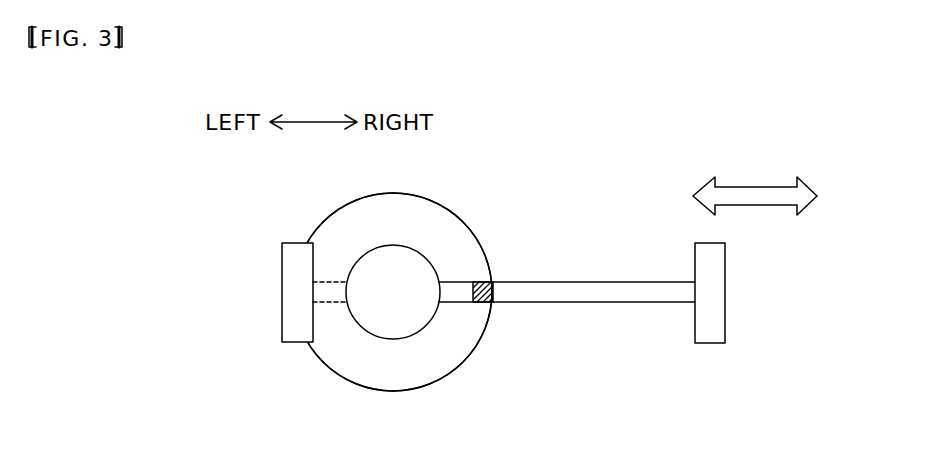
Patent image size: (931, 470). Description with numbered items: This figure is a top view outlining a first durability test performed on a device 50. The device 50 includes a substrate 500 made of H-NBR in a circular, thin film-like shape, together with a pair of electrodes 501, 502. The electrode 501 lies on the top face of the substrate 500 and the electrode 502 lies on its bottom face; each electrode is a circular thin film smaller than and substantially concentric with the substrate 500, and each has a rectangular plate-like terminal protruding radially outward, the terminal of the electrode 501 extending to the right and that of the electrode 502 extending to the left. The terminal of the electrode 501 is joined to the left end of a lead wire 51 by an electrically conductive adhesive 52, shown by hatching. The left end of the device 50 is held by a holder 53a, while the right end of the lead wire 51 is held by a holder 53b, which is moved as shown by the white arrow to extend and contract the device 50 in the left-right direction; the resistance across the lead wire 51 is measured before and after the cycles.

The device 50 is at (381, 391).
The substrate 500 is at (414, 357).
The electrode 501 is at (397, 267).
The electrode 502 is at (333, 292).
The lead wire 51 is at (557, 290).
The electrically conductive adhesive 52 is at (480, 282).
The holder 53a is at (292, 313).
The holder 53b is at (716, 297).